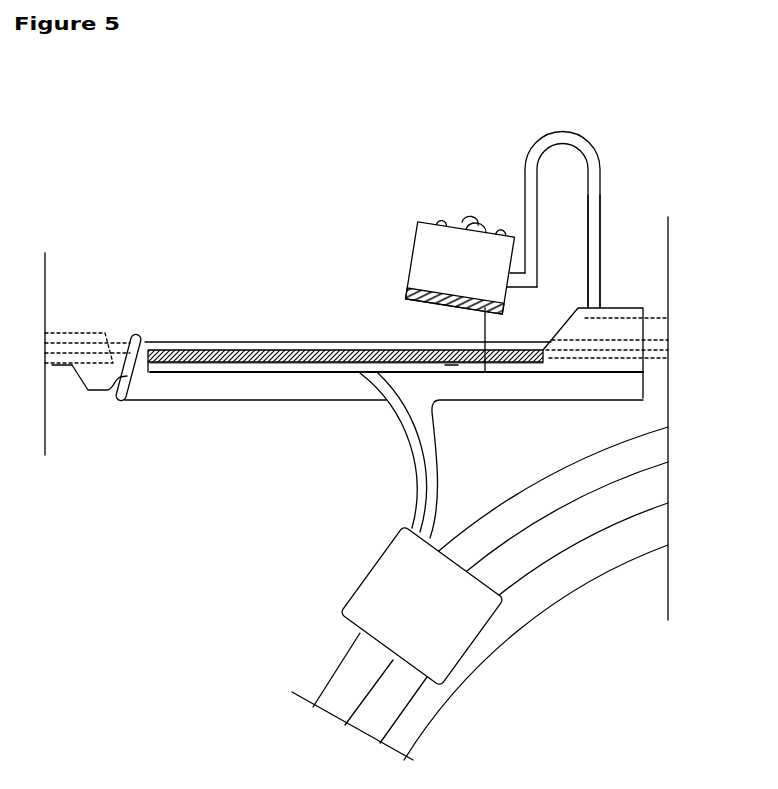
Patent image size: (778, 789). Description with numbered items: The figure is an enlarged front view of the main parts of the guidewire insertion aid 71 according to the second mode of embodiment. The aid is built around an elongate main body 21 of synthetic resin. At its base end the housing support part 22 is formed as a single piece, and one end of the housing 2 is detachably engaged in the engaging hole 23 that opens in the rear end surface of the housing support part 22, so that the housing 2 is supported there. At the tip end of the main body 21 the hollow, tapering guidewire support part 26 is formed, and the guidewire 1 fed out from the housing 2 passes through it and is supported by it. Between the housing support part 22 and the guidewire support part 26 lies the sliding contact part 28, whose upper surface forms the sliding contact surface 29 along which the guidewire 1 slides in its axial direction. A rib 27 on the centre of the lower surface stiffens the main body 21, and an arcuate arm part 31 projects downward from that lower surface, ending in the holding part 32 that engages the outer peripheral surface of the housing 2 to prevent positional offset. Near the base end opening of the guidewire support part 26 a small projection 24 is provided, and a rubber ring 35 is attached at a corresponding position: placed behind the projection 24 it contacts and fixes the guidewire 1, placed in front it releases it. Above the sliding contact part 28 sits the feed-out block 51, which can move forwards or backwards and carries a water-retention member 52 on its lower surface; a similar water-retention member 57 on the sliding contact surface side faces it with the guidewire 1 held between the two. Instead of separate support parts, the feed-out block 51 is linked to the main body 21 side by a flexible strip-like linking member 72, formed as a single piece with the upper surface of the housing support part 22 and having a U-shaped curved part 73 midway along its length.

The guidewire insertion aid 71 is at (116, 190).
The guidewire 1 is at (277, 342).
The housing 2 is at (668, 315).
The main body 21 is at (225, 373).
The housing support part 22 is at (612, 366).
The engaging hole 23 is at (597, 356).
The projection 24 is at (135, 338).
The guidewire support part 26 is at (62, 333).
The rib 27 is at (303, 388).
The sliding contact part 28 is at (258, 367).
The sliding contact surface 29 is at (349, 343).
The arm part 31 is at (417, 483).
The holding part 32 is at (445, 632).
The rubber ring 35 is at (107, 392).
The feed-out block 51 is at (418, 224).
The water-retention member 52 is at (487, 372).
The water-retention member 57 is at (451, 364).
The linking member 72 is at (600, 195).
The U-shaped curved part 73 is at (562, 134).